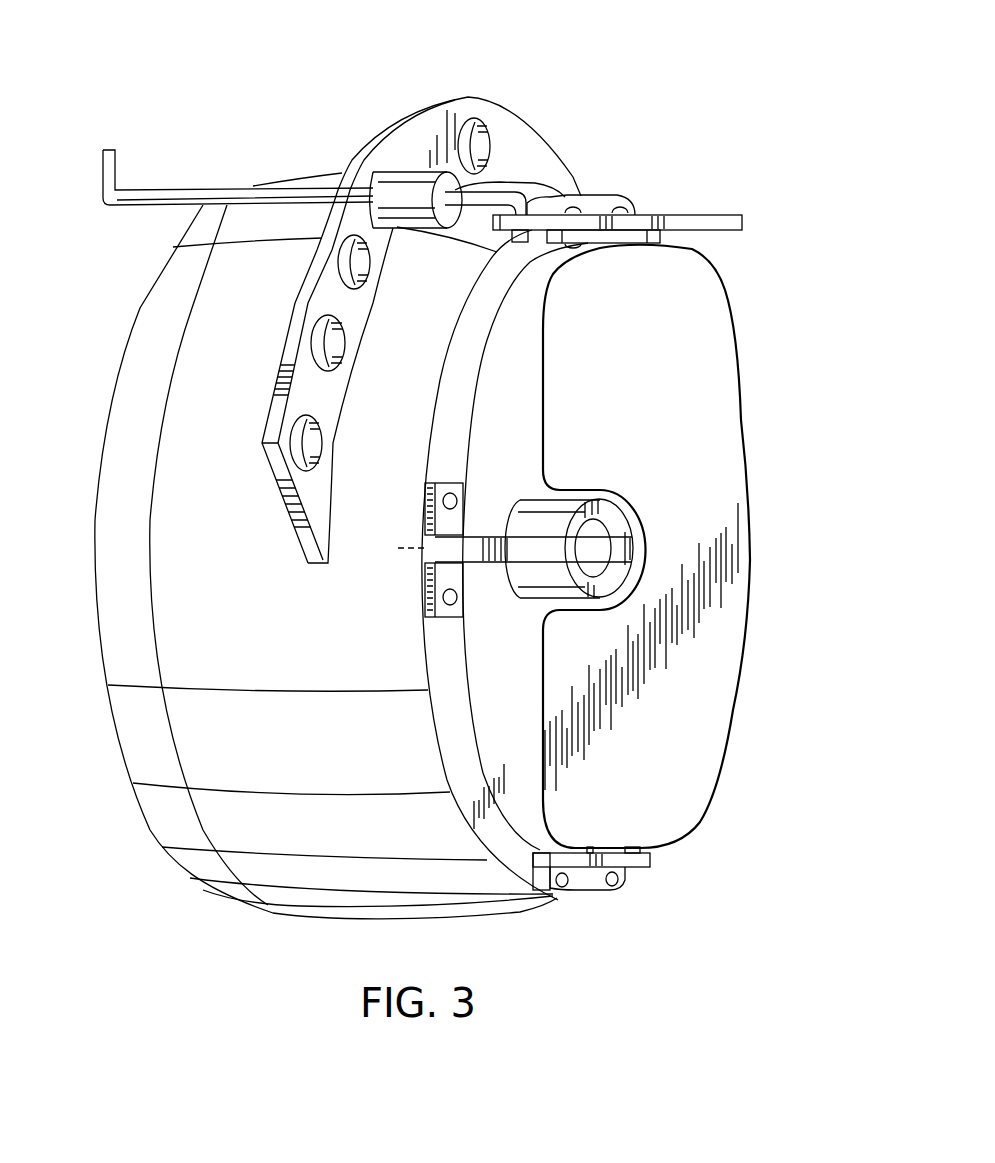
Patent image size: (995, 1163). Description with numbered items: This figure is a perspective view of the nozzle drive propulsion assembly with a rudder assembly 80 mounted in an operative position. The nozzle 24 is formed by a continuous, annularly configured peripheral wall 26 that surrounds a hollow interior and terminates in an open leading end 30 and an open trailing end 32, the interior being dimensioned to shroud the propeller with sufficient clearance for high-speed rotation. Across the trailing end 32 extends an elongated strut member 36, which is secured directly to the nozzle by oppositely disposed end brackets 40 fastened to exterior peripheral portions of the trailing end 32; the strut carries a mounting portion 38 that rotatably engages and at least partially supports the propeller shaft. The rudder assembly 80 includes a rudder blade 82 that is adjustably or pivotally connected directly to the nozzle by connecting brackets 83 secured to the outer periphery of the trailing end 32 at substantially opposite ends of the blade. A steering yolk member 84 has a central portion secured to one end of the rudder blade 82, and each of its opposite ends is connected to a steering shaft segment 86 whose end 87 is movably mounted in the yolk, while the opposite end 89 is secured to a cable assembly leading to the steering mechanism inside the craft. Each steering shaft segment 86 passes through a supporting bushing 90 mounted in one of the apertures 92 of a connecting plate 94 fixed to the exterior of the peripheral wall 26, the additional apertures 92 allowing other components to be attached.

The nozzle 24 is at (508, 923).
The peripheral wall 26 is at (226, 618).
The leading end 30 is at (150, 832).
The trailing end 32 is at (487, 780).
The strut member 36 is at (487, 535).
The mounting portion 38 is at (535, 583).
The end brackets 40 is at (428, 600).
The rudder assembly 80 is at (737, 312).
The rudder blade 82 is at (718, 714).
The connecting brackets 83 is at (635, 215).
The steering yolk member 84 is at (715, 185).
The steering shaft segments 86 is at (477, 203).
The end of steering shaft segment 87 is at (517, 248).
The opposite end of steering shaft segment 89 is at (103, 150).
The supporting bushing 90 is at (383, 186).
The apertures 92 is at (484, 148).
The connecting plate 94 is at (418, 110).